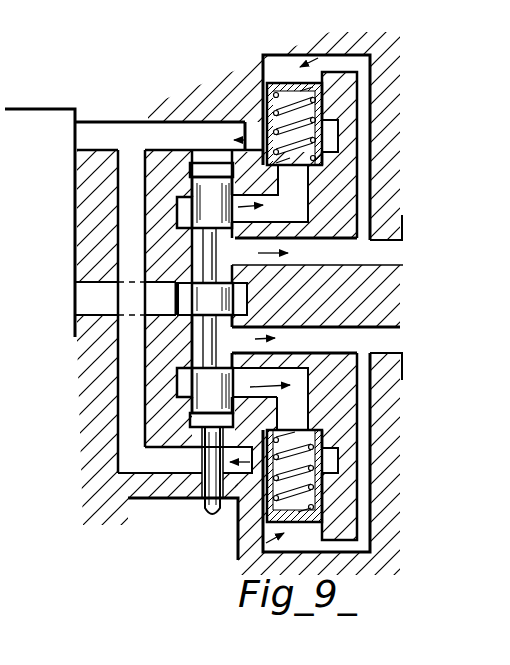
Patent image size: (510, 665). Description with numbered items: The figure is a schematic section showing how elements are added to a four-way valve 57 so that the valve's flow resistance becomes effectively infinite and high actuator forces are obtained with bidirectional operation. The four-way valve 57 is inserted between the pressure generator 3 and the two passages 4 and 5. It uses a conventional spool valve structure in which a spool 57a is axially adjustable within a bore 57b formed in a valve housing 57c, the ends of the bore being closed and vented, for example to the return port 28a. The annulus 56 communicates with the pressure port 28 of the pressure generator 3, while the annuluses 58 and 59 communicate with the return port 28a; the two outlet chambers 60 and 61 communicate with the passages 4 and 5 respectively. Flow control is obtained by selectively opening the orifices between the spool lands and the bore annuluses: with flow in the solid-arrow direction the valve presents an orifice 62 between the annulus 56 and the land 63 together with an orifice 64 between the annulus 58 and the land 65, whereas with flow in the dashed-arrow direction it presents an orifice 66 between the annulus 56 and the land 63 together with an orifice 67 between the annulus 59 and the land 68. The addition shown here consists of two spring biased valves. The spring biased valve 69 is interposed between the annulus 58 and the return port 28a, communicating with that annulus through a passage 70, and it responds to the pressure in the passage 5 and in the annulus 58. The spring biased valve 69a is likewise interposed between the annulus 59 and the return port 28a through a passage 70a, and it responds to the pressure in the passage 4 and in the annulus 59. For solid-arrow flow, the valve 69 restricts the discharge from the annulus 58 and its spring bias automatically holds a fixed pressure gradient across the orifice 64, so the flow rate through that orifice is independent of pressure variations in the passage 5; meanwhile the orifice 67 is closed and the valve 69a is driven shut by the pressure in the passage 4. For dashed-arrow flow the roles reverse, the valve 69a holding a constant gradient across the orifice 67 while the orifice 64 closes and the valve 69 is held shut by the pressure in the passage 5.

The pressure generator 3 is at (33, 107).
The passage 4 is at (378, 347).
The passage 5 is at (400, 252).
The pressure port 28 is at (75, 290).
The return port 28a is at (77, 137).
The annulus 56 is at (240, 302).
The four-way valve 57 is at (187, 487).
The spool 57a is at (207, 162).
The bore 57b is at (200, 447).
The valve housing 57c is at (192, 500).
The annulus 58 is at (177, 200).
The annulus 59 is at (192, 372).
The outlet chamber 60 is at (193, 331).
The outlet chamber 61 is at (192, 246).
The orifice 62 is at (265, 323).
The land 63 is at (194, 269).
The orifice 64 is at (240, 218).
The land 65 is at (223, 145).
The orifice 66 is at (238, 283).
The orifice 67 is at (255, 353).
The land 68 is at (207, 398).
The spring biased valve 69 is at (304, 66).
The spring biased valve 69a is at (253, 547).
The passage 70 is at (288, 155).
The passage 70a is at (289, 425).